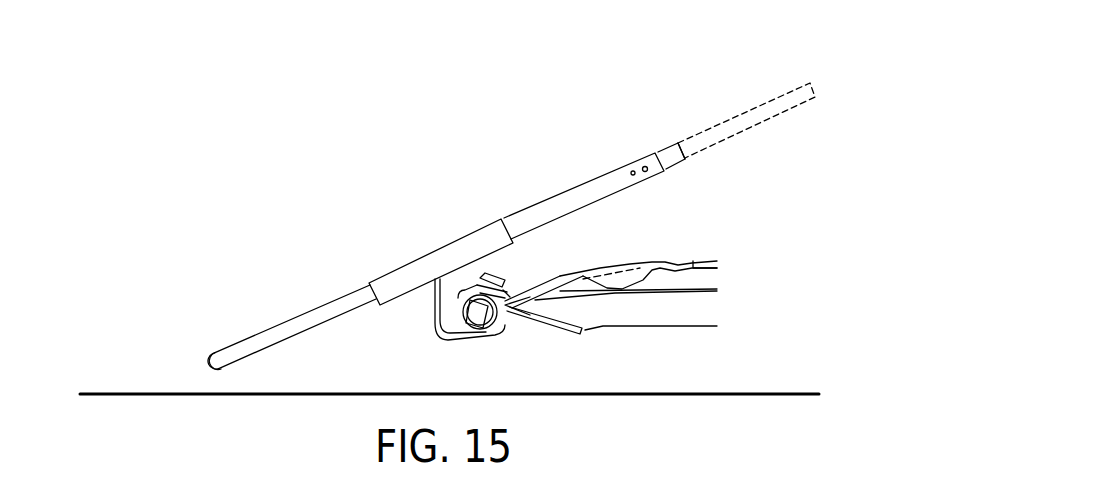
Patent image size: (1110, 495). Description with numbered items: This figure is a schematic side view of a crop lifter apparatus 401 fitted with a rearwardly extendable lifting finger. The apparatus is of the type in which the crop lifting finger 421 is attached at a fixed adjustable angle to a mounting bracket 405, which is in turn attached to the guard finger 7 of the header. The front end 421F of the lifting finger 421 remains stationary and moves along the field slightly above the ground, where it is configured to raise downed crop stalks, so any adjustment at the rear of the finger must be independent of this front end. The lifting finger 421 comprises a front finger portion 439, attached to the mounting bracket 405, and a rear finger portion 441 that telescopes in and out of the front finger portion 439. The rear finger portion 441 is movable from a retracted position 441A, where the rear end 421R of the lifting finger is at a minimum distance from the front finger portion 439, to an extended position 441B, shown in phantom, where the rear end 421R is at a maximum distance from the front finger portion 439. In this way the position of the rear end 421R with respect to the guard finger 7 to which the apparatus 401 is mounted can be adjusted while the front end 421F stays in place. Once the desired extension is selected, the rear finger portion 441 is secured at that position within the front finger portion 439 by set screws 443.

The crop lifter apparatus 401 is at (229, 202).
The lifting finger 421 is at (289, 319).
The front end of lifting finger 421F is at (211, 360).
The rear end of lifting finger 421R is at (683, 158).
The front finger portion 439 is at (521, 213).
The rear finger portion 441 is at (680, 122).
The retracted position of rear finger portion 441A is at (675, 150).
The extended position of rear finger portion 441B is at (811, 84).
The set screw 443 is at (644, 175).
The mounting bracket 405 is at (543, 273).
The guard finger 7 is at (677, 327).